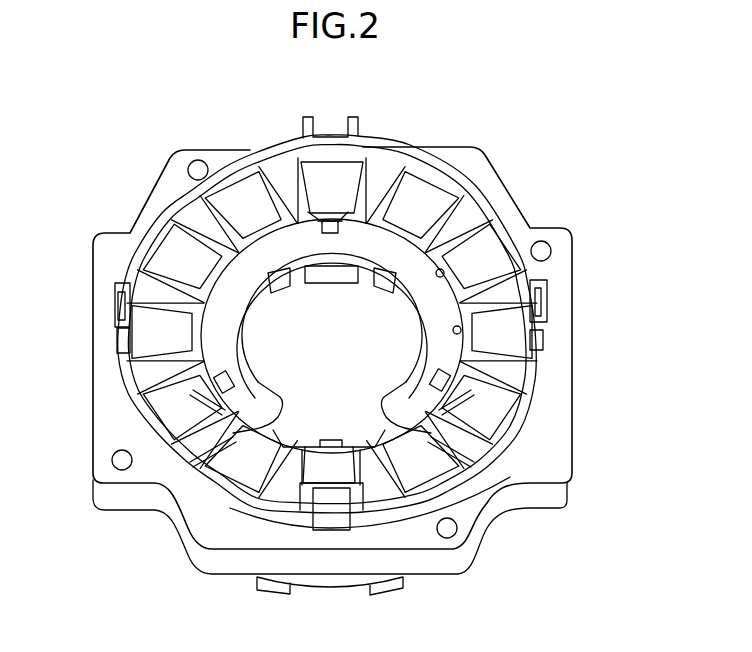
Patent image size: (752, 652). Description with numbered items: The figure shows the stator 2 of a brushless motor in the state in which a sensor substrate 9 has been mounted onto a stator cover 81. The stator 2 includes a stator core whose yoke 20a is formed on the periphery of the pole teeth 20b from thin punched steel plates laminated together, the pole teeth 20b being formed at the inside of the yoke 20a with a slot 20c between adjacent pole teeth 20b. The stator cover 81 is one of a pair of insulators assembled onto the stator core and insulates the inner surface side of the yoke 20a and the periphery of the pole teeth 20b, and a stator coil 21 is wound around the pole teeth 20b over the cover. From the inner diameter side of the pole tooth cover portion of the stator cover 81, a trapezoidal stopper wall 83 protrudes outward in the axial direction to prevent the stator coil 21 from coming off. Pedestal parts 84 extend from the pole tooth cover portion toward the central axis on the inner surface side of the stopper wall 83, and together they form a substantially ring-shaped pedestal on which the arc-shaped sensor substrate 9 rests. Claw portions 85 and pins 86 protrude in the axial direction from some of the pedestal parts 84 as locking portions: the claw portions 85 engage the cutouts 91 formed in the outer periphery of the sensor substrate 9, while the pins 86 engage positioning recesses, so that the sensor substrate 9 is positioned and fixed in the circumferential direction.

The stator 2 is at (576, 268).
The yoke 20a is at (577, 392).
The pole teeth 20b is at (347, 267).
The slot 20c is at (373, 168).
The stator coil 21 is at (405, 190).
The stator cover 81 is at (257, 140).
The sensor substrate 9 is at (390, 400).
The pedestal parts 84 is at (312, 450).
The claw portions 85 is at (228, 378).
The pins 86 is at (456, 330).
The stopper wall 83 is at (268, 432).
The cutouts 91 is at (222, 388).